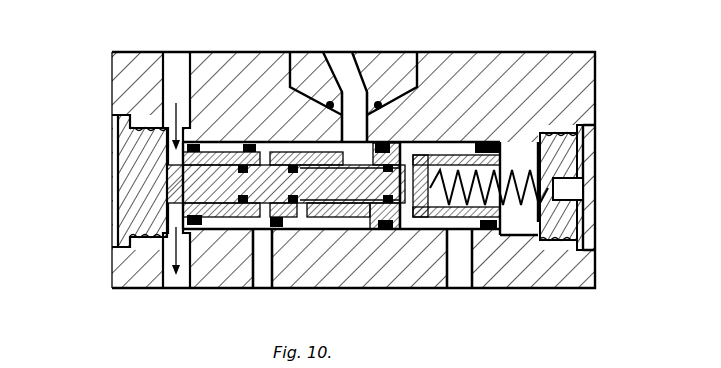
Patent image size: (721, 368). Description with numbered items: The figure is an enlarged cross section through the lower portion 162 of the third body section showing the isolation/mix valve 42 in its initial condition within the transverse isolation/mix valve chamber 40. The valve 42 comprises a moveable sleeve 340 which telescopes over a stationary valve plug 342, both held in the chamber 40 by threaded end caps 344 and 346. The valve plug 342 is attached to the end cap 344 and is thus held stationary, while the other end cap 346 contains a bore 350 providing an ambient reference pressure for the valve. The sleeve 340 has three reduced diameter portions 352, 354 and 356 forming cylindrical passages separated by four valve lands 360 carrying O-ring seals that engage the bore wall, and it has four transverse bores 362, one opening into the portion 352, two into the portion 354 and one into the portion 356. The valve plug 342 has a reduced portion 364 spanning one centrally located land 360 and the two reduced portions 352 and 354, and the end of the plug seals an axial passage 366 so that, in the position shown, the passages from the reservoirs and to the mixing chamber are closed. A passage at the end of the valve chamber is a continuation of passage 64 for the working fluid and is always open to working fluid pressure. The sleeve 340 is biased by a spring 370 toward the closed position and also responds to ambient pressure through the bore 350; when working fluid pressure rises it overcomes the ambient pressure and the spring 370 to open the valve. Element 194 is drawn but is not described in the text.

The lower enlarged end of the third body section 162 is at (583, 80).
The second passage 64 is at (177, 62).
The threaded end cap 344 is at (133, 177).
The valve plug 342 is at (133, 225).
The isolation/mix valve 42 is at (100, 135).
The housing wall 194 is at (170, 75).
The moveable sleeve 340 is at (227, 147).
The reduced diameter portion 352 is at (228, 222).
The valve land 360 is at (200, 146).
The reduced portion of the valve plug 364 is at (358, 160).
The axial passage 366 is at (412, 145).
The transverse bore 362 is at (255, 225).
The reduced diameter portion 354 is at (353, 225).
The reduced diameter portion 356 is at (453, 227).
The spring 370 is at (552, 175).
The threaded end cap 346 is at (580, 222).
The bore 350 is at (578, 190).
The isolation/mix sequence valve chamber 40 is at (525, 222).